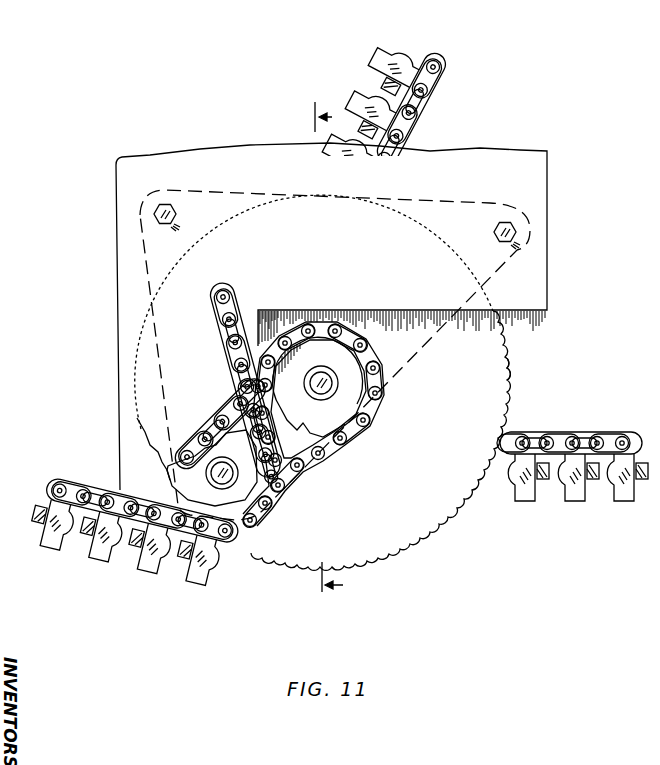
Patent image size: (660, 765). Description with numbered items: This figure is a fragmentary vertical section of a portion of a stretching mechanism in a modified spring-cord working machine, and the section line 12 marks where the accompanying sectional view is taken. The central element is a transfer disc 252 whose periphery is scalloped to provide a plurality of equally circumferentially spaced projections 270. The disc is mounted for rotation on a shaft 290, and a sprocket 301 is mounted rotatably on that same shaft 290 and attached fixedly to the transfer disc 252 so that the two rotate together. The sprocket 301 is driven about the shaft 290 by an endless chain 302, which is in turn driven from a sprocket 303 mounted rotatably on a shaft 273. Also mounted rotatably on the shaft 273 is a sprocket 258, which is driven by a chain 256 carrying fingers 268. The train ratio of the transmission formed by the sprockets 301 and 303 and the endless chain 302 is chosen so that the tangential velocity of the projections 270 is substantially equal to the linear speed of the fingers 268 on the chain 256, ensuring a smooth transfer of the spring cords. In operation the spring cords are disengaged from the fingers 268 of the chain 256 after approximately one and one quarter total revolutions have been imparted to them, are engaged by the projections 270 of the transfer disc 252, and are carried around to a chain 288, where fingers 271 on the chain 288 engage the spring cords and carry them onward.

The section line 12- 12 is at (340, 348).
The transfer disc 252 is at (502, 344).
The chain 256 is at (72, 481).
The sprocket 258 is at (170, 473).
The fingers 268 is at (143, 573).
The projections 270 is at (512, 373).
The fingers 271 is at (556, 500).
The shaft 273 is at (214, 476).
The chain 288 is at (567, 432).
The shaft 290 is at (340, 366).
The sprocket 301 is at (311, 430).
The endless chain 302 is at (380, 413).
The sprocket 303 is at (236, 436).